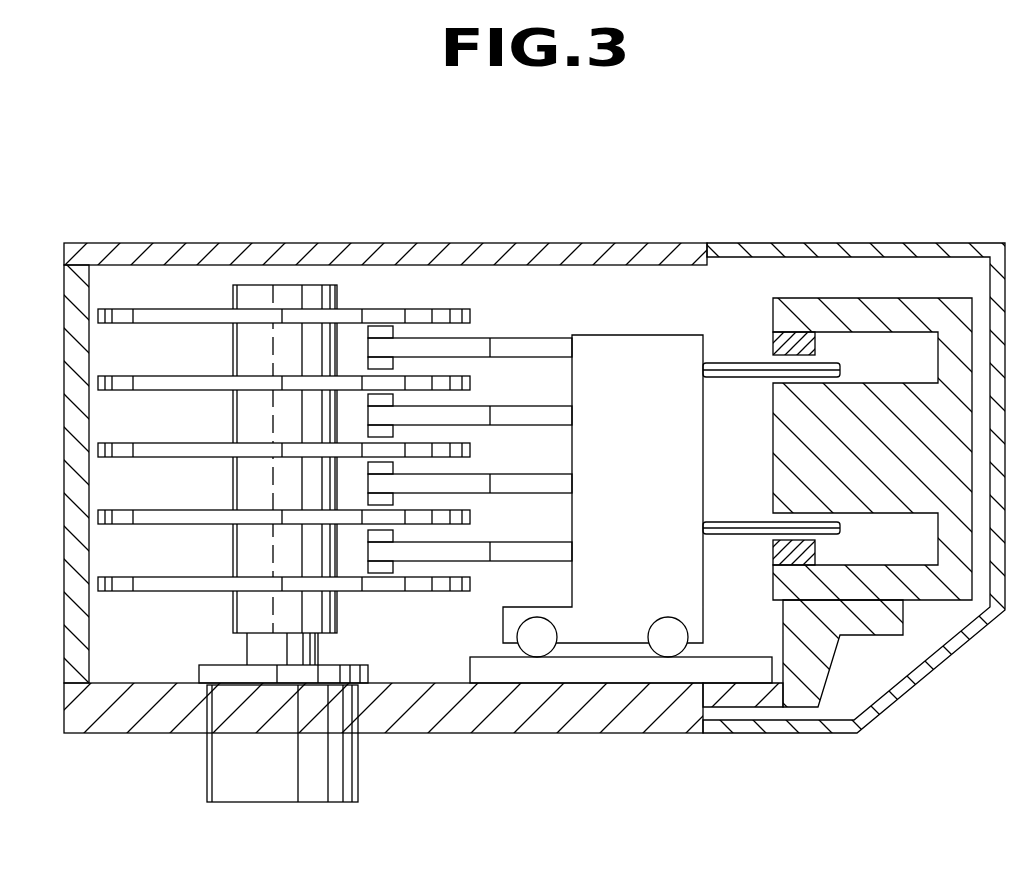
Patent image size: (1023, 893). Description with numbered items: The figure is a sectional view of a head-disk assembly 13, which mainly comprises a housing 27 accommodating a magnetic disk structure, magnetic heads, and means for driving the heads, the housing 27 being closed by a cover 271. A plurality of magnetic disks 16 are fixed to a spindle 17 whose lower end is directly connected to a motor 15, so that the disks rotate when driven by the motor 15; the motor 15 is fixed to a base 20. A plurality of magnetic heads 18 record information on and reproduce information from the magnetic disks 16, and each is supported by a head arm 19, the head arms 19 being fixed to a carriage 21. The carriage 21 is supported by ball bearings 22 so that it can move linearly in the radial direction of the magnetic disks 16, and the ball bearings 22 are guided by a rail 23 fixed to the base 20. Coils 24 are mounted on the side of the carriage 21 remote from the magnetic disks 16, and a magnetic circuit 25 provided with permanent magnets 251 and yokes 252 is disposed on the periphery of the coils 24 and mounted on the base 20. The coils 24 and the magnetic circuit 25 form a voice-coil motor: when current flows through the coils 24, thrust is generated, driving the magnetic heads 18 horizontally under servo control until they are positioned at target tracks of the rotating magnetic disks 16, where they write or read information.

The head-disk assembly 13 is at (540, 202).
The motor 15 is at (222, 748).
The magnetic disks 16 is at (122, 591).
The spindle 17 is at (262, 293).
The magnetic heads 18 is at (372, 333).
The head arm 19 is at (510, 348).
The base 20 is at (427, 718).
The carriage 21 is at (637, 345).
The ball bearings 22 is at (670, 648).
The rail 23 is at (748, 673).
The coils 24 is at (720, 363).
The magnetic circuit 25 is at (876, 294).
The permanent magnets 251 is at (772, 340).
The yokes 252 is at (828, 315).
The housing 27 is at (178, 210).
The cover 271 is at (953, 240).